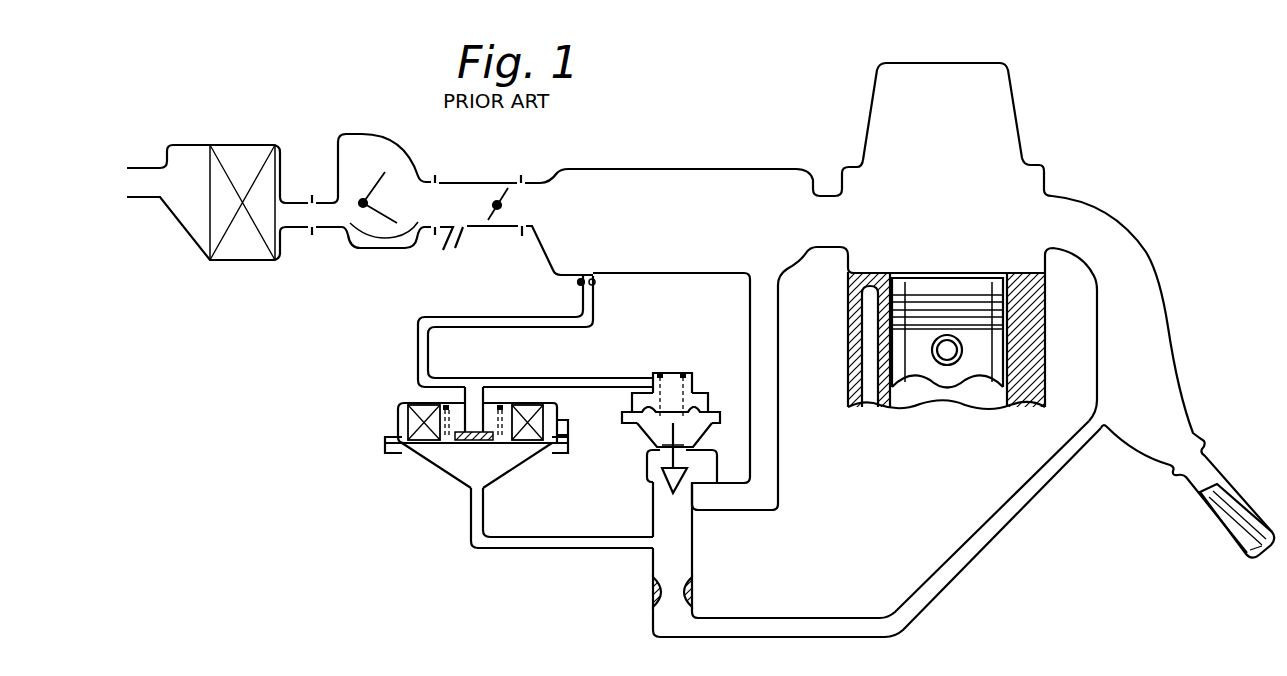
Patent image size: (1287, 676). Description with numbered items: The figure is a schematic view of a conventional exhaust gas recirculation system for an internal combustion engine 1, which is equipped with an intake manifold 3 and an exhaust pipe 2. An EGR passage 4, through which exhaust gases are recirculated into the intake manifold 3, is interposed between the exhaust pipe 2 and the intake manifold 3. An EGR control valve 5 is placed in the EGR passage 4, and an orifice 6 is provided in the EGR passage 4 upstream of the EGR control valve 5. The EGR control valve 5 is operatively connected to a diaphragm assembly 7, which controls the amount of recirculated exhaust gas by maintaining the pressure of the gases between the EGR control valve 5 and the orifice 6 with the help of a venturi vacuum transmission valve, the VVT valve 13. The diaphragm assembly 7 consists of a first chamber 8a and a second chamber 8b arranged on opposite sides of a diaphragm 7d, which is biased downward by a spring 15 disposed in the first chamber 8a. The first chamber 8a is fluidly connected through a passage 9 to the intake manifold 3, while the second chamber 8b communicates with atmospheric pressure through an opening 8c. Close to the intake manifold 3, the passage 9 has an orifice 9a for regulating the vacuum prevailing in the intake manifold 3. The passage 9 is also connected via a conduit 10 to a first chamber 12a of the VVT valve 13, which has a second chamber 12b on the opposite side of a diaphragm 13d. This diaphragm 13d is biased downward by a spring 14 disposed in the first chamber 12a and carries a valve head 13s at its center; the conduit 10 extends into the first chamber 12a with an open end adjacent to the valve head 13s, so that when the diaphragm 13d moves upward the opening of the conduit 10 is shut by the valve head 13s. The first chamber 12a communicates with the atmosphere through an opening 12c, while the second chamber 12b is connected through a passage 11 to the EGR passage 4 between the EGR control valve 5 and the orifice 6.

The internal combustion engine 1 is at (1024, 108).
The exhaust pipe 2 is at (1156, 266).
The intake manifold 3 is at (738, 178).
The EGR passage 4 is at (915, 583).
The EGR control valve 5 is at (646, 481).
The orifice 6 is at (694, 592).
The diaphragm assembly 7 is at (693, 353).
The diaphragm 7d is at (640, 430).
The first chamber 8a is at (665, 390).
The second chamber 8b is at (655, 441).
The opening 8c is at (700, 436).
The passage 9 is at (507, 316).
The orifice 9a is at (598, 284).
The conduit 10 is at (460, 407).
The passage 11 is at (585, 537).
The first chamber 12a is at (490, 412).
The second chamber 12b is at (468, 462).
The opening 12c is at (560, 419).
The VVT valve 13 is at (400, 462).
The diaphragm 13d is at (400, 428).
The valve head 13s is at (487, 440).
The spring 14 is at (507, 441).
The spring 15 is at (690, 386).